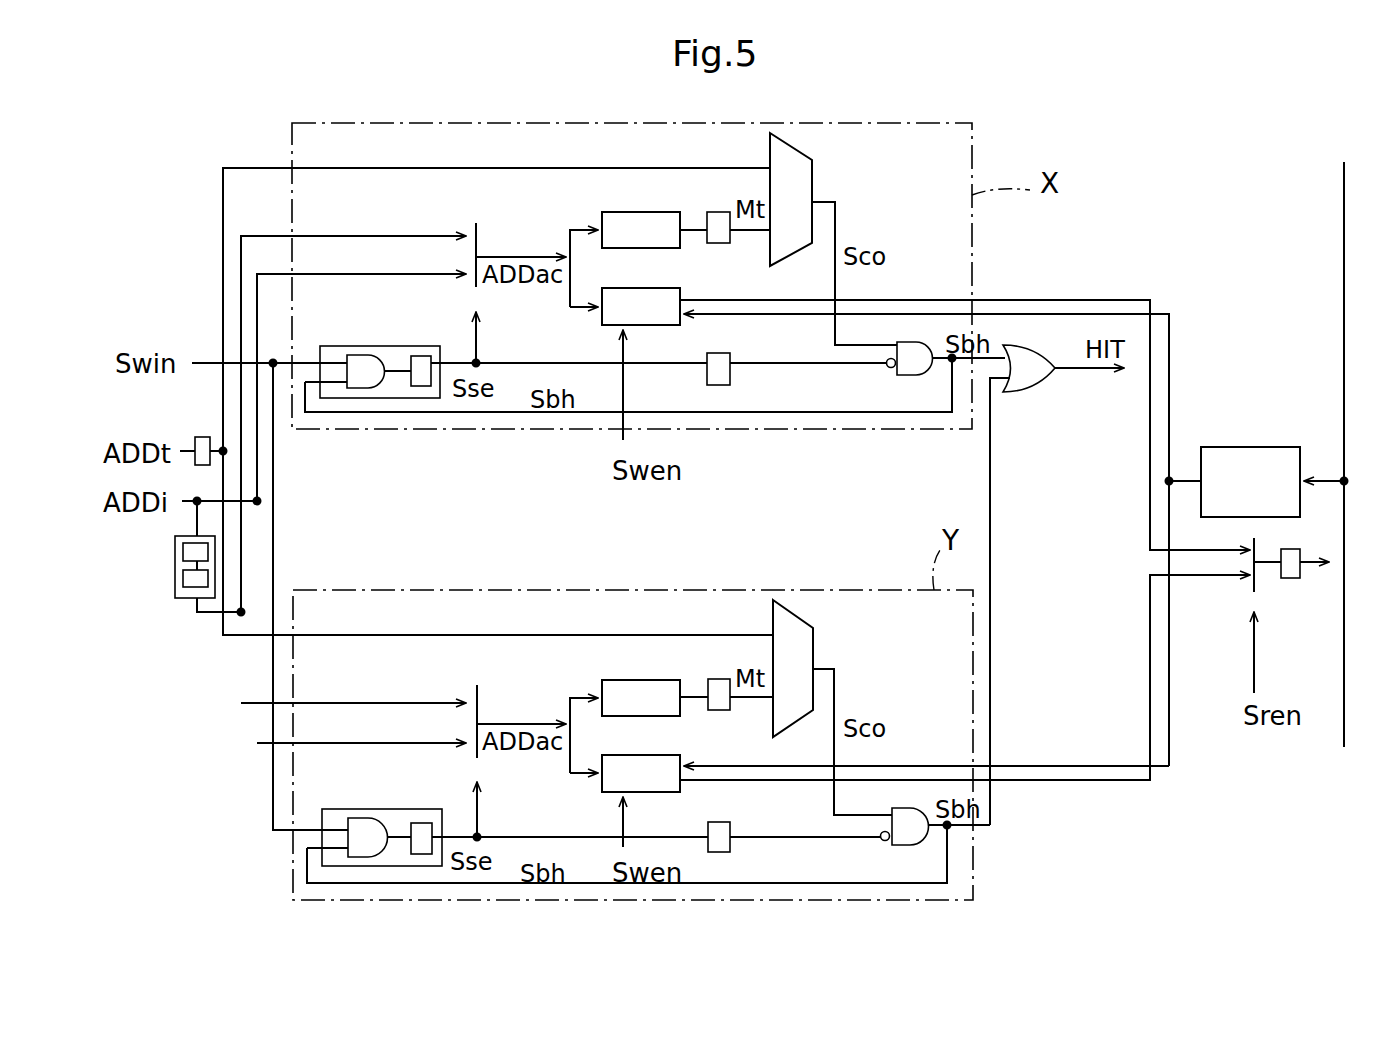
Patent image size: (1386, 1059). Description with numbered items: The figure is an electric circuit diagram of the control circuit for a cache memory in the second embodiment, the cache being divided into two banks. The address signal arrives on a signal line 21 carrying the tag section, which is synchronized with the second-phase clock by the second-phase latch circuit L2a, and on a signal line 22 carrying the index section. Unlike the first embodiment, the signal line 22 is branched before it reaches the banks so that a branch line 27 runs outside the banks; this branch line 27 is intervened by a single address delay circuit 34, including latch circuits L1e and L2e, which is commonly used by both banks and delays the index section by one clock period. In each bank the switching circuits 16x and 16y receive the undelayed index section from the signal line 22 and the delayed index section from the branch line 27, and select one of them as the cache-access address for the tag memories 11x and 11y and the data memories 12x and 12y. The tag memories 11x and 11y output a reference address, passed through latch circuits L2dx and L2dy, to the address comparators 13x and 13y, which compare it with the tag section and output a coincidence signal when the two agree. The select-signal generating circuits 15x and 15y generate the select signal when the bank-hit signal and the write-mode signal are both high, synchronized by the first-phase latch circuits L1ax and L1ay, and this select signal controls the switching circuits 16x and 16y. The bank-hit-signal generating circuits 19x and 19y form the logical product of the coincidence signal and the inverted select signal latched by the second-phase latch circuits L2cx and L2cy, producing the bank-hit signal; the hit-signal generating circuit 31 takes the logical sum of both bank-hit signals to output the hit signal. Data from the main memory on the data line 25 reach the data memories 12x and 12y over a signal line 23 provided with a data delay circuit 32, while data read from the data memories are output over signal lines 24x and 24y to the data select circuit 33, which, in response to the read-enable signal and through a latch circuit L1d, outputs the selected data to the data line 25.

The signal line for inputting the tag section 21 is at (223, 262).
The signal line for inputting the index section 22 is at (207, 497).
The branch line for inputting the index section 27 is at (197, 518).
The address delay circuit 34 is at (170, 584).
The switching circuit 16x is at (482, 238).
The switching circuit 16y is at (483, 700).
The tag memory 11x is at (613, 210).
The tag memory 11y is at (613, 678).
The data memory 12x is at (635, 326).
The data memory 12y is at (635, 793).
The address comparator 13x is at (812, 172).
The address comparator 13y is at (788, 612).
The select-signal generating circuit 15x is at (391, 398).
The select-signal generating circuit 15y is at (370, 820).
The bank-hit-signal generating circuit 19x is at (905, 376).
The bank-hit-signal generating circuit 19y is at (900, 846).
The signal line 24x is at (1073, 298).
The signal line 24y is at (1098, 782).
The signal line 23 is at (1170, 367).
The signal line 25 is at (1344, 218).
The hit-signal generating circuit 31 is at (1032, 392).
The data delay circuit 32 is at (1250, 447).
The data select circuit 33 is at (1258, 582).
The second-phase latch circuit L2a is at (201, 437).
The latch circuit L2e is at (183, 552).
The latch circuit L1e is at (183, 578).
The first-phase latch circuit L1ax is at (420, 356).
The first-phase latch circuit L1ay is at (421, 823).
The latch circuit L2dx is at (717, 244).
The latch circuit L2dy is at (717, 711).
The second-phase latch circuit L2cx is at (710, 352).
The second-phase latch circuit L2cy is at (711, 821).
The latch circuit L1d is at (1291, 578).